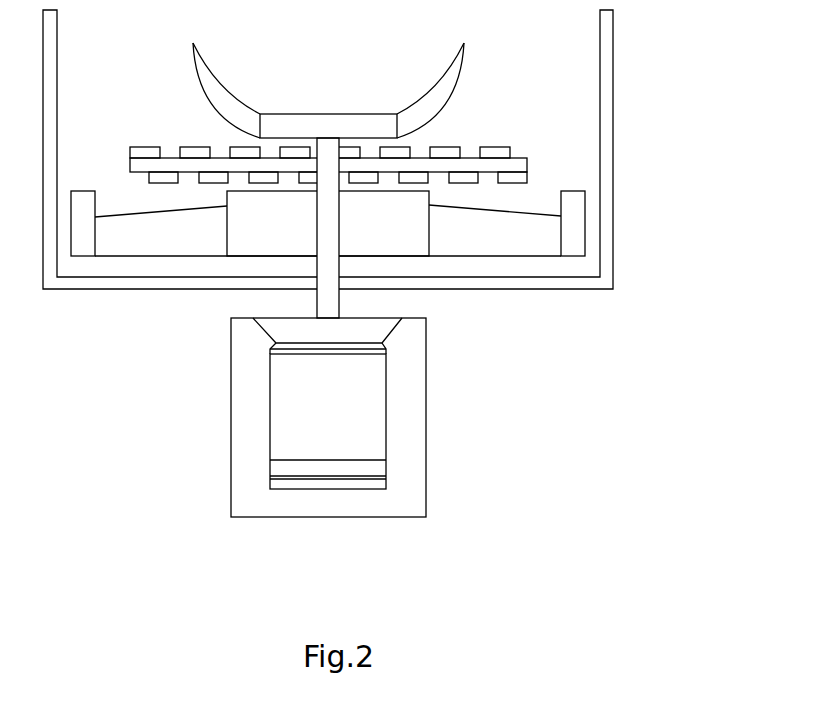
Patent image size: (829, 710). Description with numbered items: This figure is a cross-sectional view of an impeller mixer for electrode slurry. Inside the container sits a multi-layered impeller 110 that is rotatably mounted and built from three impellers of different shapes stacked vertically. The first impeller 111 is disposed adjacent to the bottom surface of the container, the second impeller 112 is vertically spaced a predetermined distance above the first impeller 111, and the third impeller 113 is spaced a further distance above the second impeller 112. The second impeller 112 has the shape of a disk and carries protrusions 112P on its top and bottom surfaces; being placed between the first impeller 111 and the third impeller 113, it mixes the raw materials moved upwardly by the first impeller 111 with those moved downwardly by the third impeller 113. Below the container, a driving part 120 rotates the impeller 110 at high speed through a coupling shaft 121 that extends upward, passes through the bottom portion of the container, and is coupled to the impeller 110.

The impeller 110 is at (695, 88).
The first impeller 111 is at (577, 228).
The second impeller 112 is at (520, 164).
The protrusions 112P is at (513, 176).
The third impeller 113 is at (452, 87).
The driving part 120 is at (426, 415).
The coupling shaft 121 is at (330, 301).